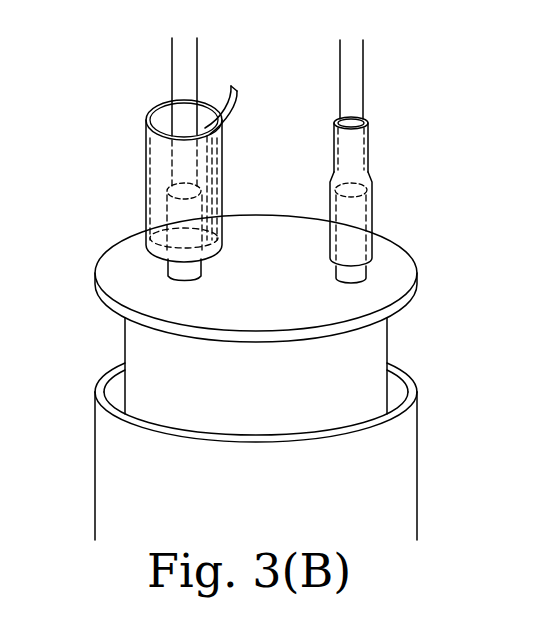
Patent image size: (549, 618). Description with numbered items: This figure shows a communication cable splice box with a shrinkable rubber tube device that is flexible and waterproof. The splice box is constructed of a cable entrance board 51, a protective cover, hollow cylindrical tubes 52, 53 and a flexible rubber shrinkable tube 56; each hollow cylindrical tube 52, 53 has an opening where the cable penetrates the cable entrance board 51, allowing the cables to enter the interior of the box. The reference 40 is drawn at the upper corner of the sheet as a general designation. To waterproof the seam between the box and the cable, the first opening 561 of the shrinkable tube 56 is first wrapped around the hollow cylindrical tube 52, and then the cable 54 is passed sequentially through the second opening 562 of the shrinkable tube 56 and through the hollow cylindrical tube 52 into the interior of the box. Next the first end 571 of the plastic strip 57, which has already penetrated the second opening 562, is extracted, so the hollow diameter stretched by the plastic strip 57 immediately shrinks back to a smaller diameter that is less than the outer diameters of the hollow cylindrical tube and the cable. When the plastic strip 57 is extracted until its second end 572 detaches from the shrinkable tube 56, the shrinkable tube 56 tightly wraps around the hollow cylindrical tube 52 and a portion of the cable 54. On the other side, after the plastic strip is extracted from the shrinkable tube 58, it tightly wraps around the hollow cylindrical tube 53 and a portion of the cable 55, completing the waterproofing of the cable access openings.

The sample container assembly 40 is at (497, 38).
The cable entrance board 51 is at (407, 266).
The hollow cylindrical tube 52 is at (147, 228).
The hollow cylindrical tube 53 is at (370, 214).
The cable 54 is at (172, 68).
The cable 55 is at (363, 82).
The flexible rubber shrinkable tube 56 is at (147, 192).
The plastic strip 57 is at (218, 160).
The shrinkable tube 58 is at (369, 148).
The first opening 561 is at (208, 259).
The second opening 562 is at (200, 120).
The first end 571 is at (232, 88).
The second end 572 is at (155, 110).